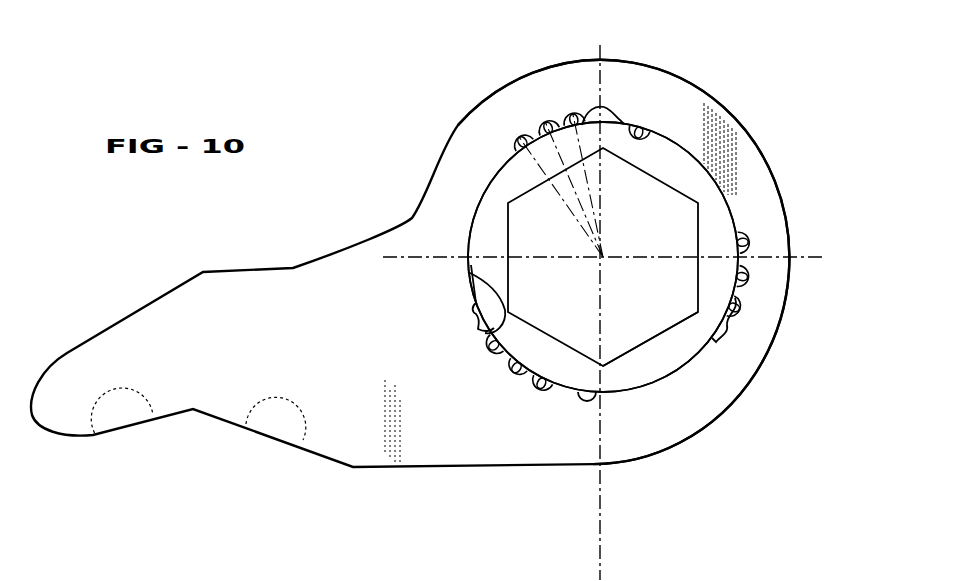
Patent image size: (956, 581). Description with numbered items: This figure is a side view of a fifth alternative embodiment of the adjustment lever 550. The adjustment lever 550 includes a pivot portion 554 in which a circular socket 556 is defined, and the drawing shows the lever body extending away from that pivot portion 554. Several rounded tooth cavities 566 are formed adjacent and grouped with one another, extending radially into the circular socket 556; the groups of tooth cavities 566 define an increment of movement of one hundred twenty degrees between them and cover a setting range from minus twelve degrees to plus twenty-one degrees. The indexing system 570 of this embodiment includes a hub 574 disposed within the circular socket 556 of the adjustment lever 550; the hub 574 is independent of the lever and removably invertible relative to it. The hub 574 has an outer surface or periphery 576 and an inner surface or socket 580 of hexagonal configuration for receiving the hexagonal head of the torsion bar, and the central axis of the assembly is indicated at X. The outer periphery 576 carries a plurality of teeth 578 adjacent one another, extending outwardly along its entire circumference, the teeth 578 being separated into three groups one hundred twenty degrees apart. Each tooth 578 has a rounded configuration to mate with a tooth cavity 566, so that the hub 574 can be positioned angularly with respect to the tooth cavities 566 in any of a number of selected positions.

The adjustment lever 550 is at (322, 167).
The pivot portion 554 is at (693, 108).
The circular socket 556 is at (648, 127).
The tooth cavities 566 is at (772, 413).
The indexing system 570 is at (790, 184).
The hub 574 is at (648, 366).
The outer surface or periphery 576 is at (468, 272).
The teeth 578 is at (616, 116).
The inner surface or socket 580 is at (547, 332).
The axis X is at (600, 52).